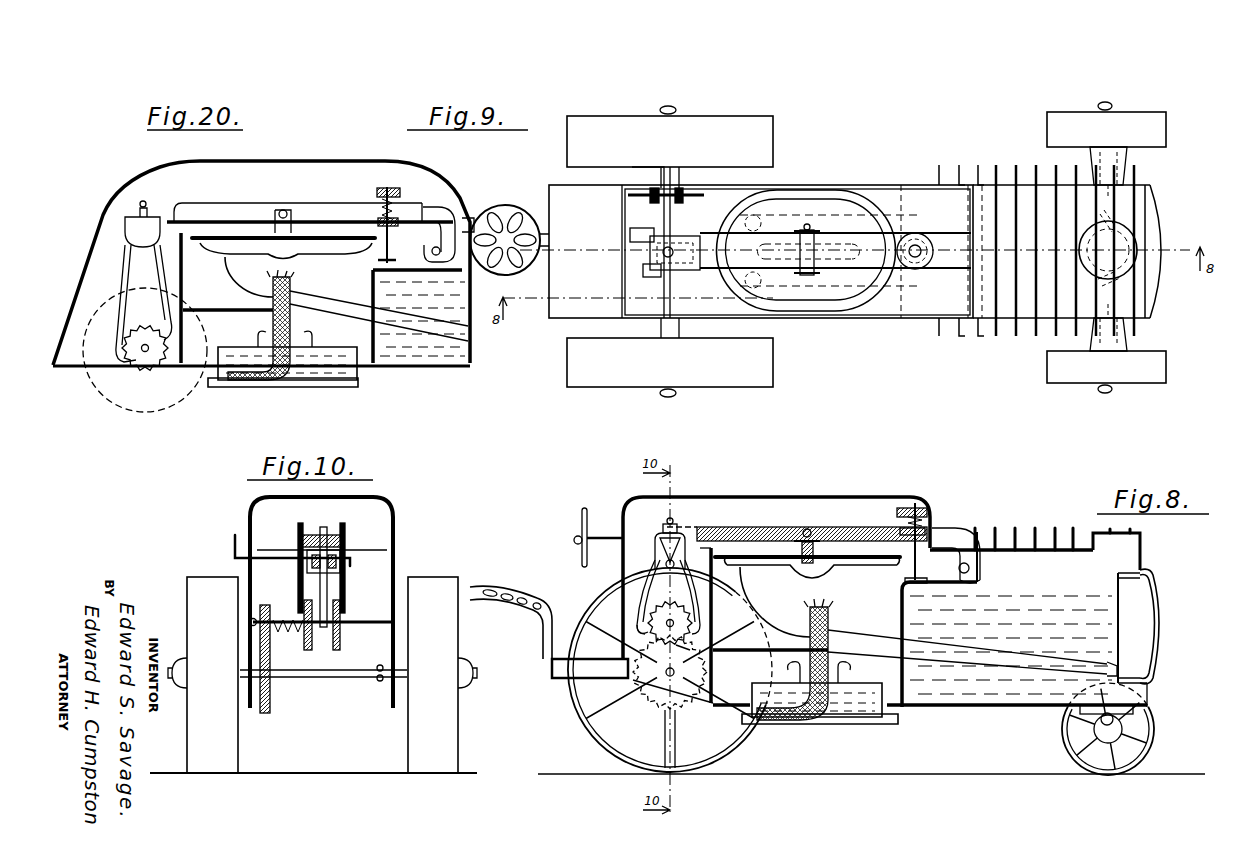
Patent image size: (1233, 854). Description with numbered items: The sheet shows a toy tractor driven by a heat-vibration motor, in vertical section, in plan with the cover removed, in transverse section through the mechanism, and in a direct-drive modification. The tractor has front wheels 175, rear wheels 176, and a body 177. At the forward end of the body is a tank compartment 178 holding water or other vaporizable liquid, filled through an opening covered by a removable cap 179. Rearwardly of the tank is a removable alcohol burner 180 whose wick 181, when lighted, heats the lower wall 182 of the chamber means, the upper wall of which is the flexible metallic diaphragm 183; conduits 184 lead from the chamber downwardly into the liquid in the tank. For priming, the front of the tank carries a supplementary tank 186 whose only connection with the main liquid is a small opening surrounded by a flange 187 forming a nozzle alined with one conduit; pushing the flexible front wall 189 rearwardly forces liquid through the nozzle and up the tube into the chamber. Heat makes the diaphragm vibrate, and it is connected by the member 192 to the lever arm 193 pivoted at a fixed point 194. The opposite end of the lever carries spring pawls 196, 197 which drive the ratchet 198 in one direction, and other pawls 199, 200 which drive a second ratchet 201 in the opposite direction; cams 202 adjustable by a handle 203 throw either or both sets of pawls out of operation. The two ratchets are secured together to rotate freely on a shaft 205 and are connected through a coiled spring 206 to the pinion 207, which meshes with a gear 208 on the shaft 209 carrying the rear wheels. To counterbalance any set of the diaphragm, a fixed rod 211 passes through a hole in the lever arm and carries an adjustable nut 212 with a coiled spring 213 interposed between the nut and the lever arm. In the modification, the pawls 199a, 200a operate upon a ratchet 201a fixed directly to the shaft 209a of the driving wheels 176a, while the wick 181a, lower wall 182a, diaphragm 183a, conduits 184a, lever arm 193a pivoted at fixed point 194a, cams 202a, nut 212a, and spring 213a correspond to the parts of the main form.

In FIG. 8, the front wheels 175 is at (1166, 745).
In FIG. 9, the rear wheels 176 is at (598, 123).
In FIG. 10, the rear wheels 176 is at (238, 751).
In FIG. 8, the rear wheels 176 is at (738, 749).
In FIG. 9, the body 177 is at (829, 185).
In FIG. 10, the body 177 is at (390, 573).
In FIG. 8, the tank compartment 178 is at (900, 604).
In FIG. 9, the removable cap 179 is at (1134, 235).
In FIG. 8, the removable cap 179 is at (1105, 532).
In FIG. 8, the alcohol burner 180 is at (838, 724).
In FIG. 8, the wick 181 is at (825, 611).
In FIG. 8, the lower wall 182 is at (845, 571).
In FIG. 9, the flexible metallic diaphragm 183 is at (825, 293).
In FIG. 8, the flexible metallic diaphragm 183 is at (855, 555).
In FIG. 9, the conduits 184 is at (912, 212).
In FIG. 8, the conduits 184 is at (772, 599).
In FIG. 9, the supplementary tank 186 is at (1123, 286).
In FIG. 8, the supplementary tank 186 is at (1120, 584).
In FIG. 9, the flange 187 is at (1116, 217).
In FIG. 8, the flange 187 is at (1125, 665).
In FIG. 8, the front wall 189 is at (1160, 602).
In FIG. 8, the member 192 is at (790, 533).
In FIG. 9, the lever arm 193 is at (835, 249).
In FIG. 10, the lever arm 193 is at (307, 535).
In FIG. 8, the lever arm 193 is at (817, 534).
In FIG. 8, the fixed point 194 is at (973, 571).
In FIG. 10, the spring pawl 196 is at (342, 591).
In FIG. 8, the spring pawl 196 is at (703, 618).
In FIG. 9, the spring pawl 197 is at (645, 268).
In FIG. 8, the spring pawl 197 is at (647, 596).
In FIG. 10, the ratchet 198 is at (340, 648).
In FIG. 8, the ratchet 198 is at (705, 644).
In FIG. 10, the pawl 199 is at (298, 591).
In FIG. 8, the pawl 199 is at (705, 590).
In FIG. 9, the pawl 200 is at (630, 239).
In FIG. 8, the pawl 200 is at (638, 609).
In FIG. 10, the second ratchet 201 is at (306, 636).
In FIG. 10, the cams 202 is at (335, 578).
In FIG. 8, the cams 202 is at (665, 563).
In FIG. 9, the handle 203 is at (651, 242).
In FIG. 10, the handle 203 is at (233, 552).
In FIG. 8, the handle 203 is at (637, 532).
In FIG. 10, the shaft 205 is at (343, 621).
In FIG. 10, the coiled spring 206 is at (290, 633).
In FIG. 9, the pinion 207 is at (659, 200).
In FIG. 10, the pinion 207 is at (262, 607).
In FIG. 9, the gear 208 is at (628, 195).
In FIG. 10, the gear 208 is at (270, 690).
In FIG. 8, the gear 208 is at (657, 708).
In FIG. 10, the shaft 209 is at (322, 679).
In FIG. 8, the shaft 209 is at (666, 672).
In FIG. 8, the fixed rod 211 is at (920, 566).
In FIG. 9, the adjustable nut 212 is at (919, 270).
In FIG. 8, the adjustable nut 212 is at (933, 504).
In FIG. 8, the coiled spring 213 is at (933, 524).
In FIG. 20, the driving wheels 176a is at (187, 390).
In FIG. 20, the wick 181a is at (293, 291).
In FIG. 20, the lower wall 182a is at (312, 253).
In FIG. 20, the flexible metallic diaphragm 183a is at (222, 237).
In FIG. 20, the conduits 184a is at (240, 273).
In FIG. 20, the lever arm 193a is at (213, 207).
In FIG. 20, the fixed point 194a is at (439, 248).
In FIG. 20, the pawl 199a is at (168, 310).
In FIG. 20, the pawl 200a is at (122, 303).
In FIG. 20, the ratchet 201a is at (137, 367).
In FIG. 20, the cams 202a is at (140, 272).
In FIG. 20, the shaft 209a is at (142, 377).
In FIG. 20, the adjustable nut 212a is at (400, 192).
In FIG. 20, the coiled spring 213a is at (410, 215).